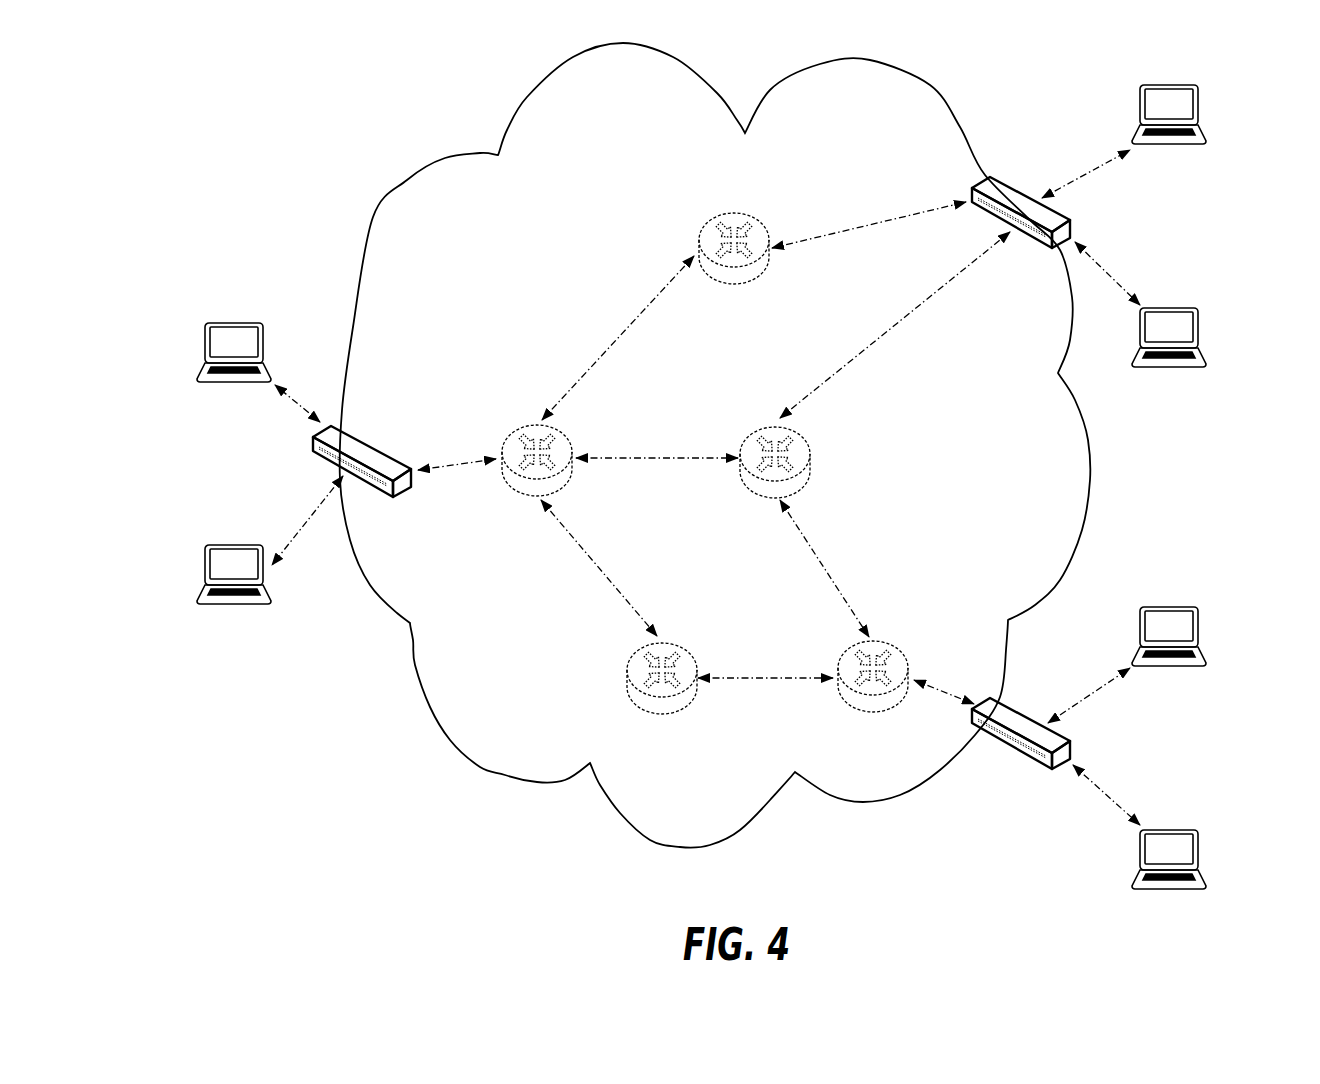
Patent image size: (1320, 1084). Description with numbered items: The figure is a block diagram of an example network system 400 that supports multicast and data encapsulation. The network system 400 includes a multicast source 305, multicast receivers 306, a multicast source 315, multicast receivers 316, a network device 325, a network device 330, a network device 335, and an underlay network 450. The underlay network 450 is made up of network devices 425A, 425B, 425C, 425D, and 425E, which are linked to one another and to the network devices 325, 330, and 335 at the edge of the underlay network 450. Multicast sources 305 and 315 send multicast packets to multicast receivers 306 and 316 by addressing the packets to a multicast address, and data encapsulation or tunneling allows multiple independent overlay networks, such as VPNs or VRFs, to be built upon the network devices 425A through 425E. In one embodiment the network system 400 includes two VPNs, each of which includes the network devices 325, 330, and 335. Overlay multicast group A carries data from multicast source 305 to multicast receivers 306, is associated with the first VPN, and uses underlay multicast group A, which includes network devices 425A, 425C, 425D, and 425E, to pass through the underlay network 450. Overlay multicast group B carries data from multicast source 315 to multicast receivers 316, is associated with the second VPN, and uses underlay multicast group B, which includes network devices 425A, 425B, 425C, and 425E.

The network system 400 is at (305, 135).
The underlay network 450 is at (715, 445).
The network device 425A is at (577, 432).
The network device 425B is at (755, 214).
The network device 425C is at (812, 436).
The network device 425D is at (697, 650).
The network device 425E is at (896, 645).
The network device 325 is at (312, 432).
The network device 330 is at (1075, 222).
The network device 335 is at (1075, 742).
The multicast source 305 is at (200, 360).
The multicast receivers 306 is at (1205, 120).
The multicast source 315 is at (1205, 345).
The multicast receivers 316 is at (200, 582).